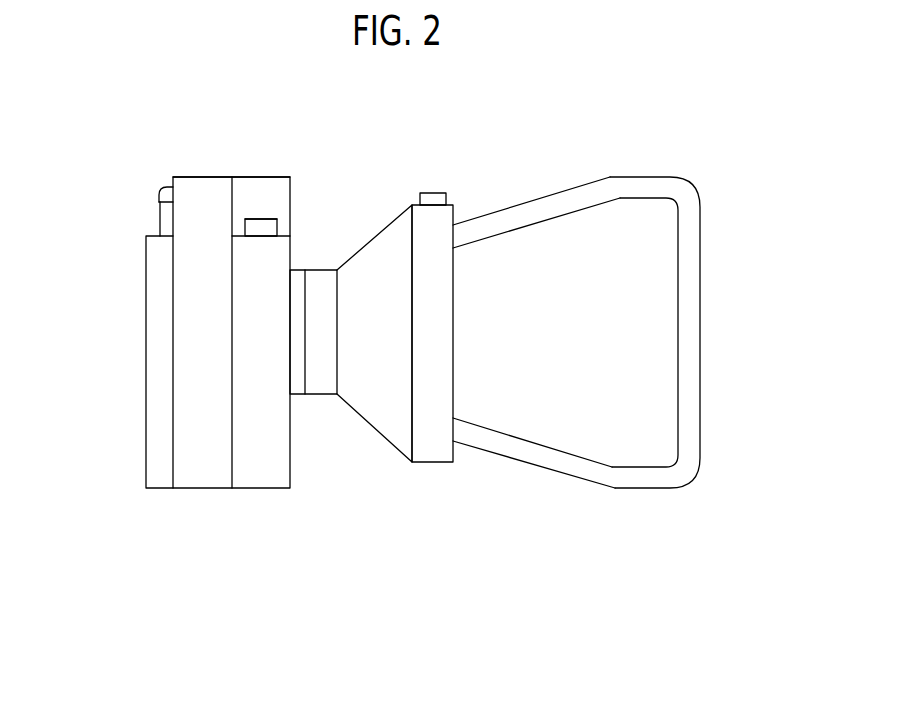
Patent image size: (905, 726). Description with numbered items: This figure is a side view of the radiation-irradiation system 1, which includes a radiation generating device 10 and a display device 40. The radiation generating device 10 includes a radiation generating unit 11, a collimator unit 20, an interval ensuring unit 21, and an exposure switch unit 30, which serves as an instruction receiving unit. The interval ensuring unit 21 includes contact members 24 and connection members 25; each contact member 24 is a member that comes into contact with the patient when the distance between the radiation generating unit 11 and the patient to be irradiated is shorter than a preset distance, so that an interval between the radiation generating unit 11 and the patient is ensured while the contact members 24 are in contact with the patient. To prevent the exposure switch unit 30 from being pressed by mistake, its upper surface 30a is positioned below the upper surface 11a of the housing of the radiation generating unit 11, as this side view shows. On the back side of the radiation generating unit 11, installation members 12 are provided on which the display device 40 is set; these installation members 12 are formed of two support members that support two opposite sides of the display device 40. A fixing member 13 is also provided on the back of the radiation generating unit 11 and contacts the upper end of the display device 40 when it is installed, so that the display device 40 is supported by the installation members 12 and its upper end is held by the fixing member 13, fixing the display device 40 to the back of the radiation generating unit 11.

The radiation-irradiation system 1 is at (88, 203).
The radiation generating device 10 is at (524, 413).
The radiation generating unit 11 is at (201, 494).
The upper surface of the housing 11a is at (255, 173).
The installation members 12 is at (153, 302).
The fixing member 13 is at (168, 186).
The collimator unit 20 is at (377, 419).
The interval ensuring unit 21 is at (606, 369).
The contact members 24 is at (692, 285).
The connection members 25 is at (512, 442).
The exposure switch unit 30 is at (267, 227).
The upper surface of the exposure switch unit 30a is at (272, 214).
The display device 40 is at (155, 227).